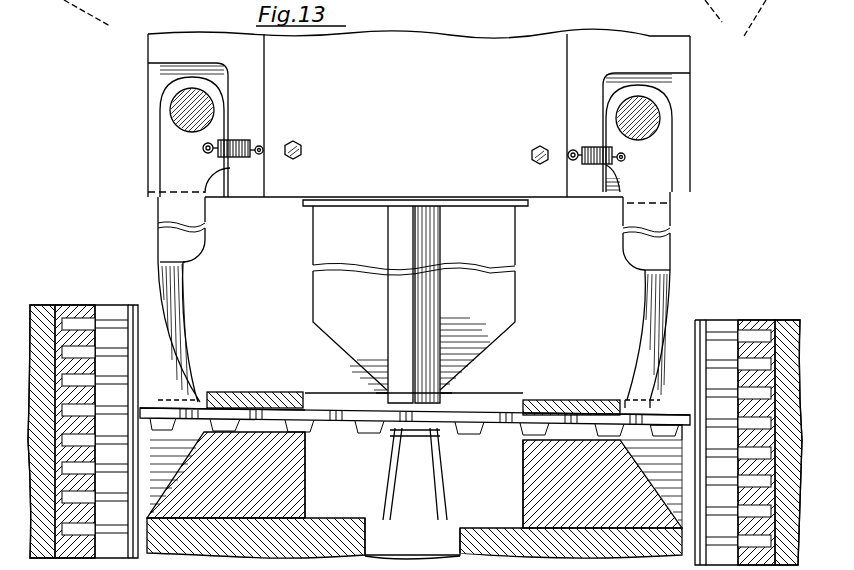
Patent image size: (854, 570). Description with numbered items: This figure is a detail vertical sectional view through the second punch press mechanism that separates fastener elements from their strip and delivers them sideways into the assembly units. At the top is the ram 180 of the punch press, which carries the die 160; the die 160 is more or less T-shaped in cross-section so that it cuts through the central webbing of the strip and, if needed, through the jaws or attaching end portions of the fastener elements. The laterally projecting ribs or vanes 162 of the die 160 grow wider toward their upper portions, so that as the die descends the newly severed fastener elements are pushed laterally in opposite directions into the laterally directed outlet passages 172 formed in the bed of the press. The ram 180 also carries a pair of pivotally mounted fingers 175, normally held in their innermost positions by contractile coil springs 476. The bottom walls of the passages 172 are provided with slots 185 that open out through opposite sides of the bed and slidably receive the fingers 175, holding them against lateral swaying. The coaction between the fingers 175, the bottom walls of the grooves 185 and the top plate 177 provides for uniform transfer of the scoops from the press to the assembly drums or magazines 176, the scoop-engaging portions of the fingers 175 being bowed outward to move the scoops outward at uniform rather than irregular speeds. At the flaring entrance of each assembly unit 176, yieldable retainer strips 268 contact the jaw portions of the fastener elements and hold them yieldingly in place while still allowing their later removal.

The ram 180 is at (419, 116).
The contractile coil springs 476 is at (572, 150).
The die 160 is at (392, 237).
The laterally projecting ribs or vanes 162 is at (414, 332).
The pivotally mounted fingers 175 is at (414, 231).
The slots 185 is at (166, 405).
The outlet passages 172 is at (258, 402).
The top plate 177 is at (558, 405).
The assembly drums or magazines 176 is at (49, 296).
The yieldable retainer strips 268 is at (128, 306).